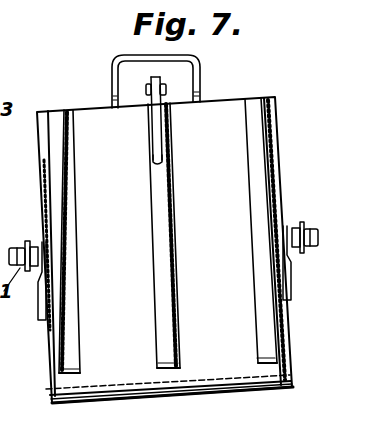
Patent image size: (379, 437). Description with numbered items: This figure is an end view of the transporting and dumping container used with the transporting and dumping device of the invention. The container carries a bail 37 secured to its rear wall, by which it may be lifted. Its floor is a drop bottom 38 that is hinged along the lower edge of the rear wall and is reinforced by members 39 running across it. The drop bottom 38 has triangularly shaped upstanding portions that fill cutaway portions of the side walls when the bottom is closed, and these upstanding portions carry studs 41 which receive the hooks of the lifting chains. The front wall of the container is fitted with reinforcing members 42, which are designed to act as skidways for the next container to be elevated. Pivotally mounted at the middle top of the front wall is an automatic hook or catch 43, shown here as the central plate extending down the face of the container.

The bail 37 is at (200, 89).
The drop bottom 38 is at (293, 386).
The reinforcing members 39 is at (263, 389).
The studs 41 is at (306, 237).
The reinforcing members 42 is at (66, 248).
The automatic hook or catch 43 is at (152, 139).